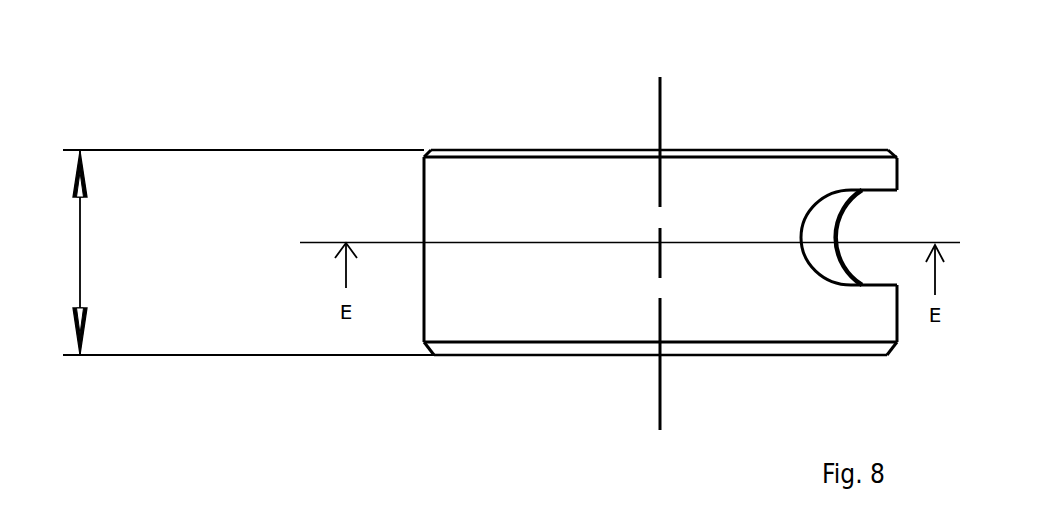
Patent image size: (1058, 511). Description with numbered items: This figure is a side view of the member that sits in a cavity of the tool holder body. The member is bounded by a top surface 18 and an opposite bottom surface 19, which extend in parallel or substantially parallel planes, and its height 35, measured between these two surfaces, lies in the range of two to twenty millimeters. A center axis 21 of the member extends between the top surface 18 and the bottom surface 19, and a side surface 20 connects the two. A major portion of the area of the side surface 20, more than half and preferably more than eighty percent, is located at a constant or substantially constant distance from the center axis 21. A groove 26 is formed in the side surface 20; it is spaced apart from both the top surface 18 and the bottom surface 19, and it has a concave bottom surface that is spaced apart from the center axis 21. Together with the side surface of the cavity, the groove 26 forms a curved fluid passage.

The top surface 18 is at (502, 145).
The bottom surface 19 is at (517, 359).
The side surface 20 is at (577, 264).
The center axis 21 is at (660, 105).
The groove 26 is at (860, 235).
The height 35 is at (237, 252).